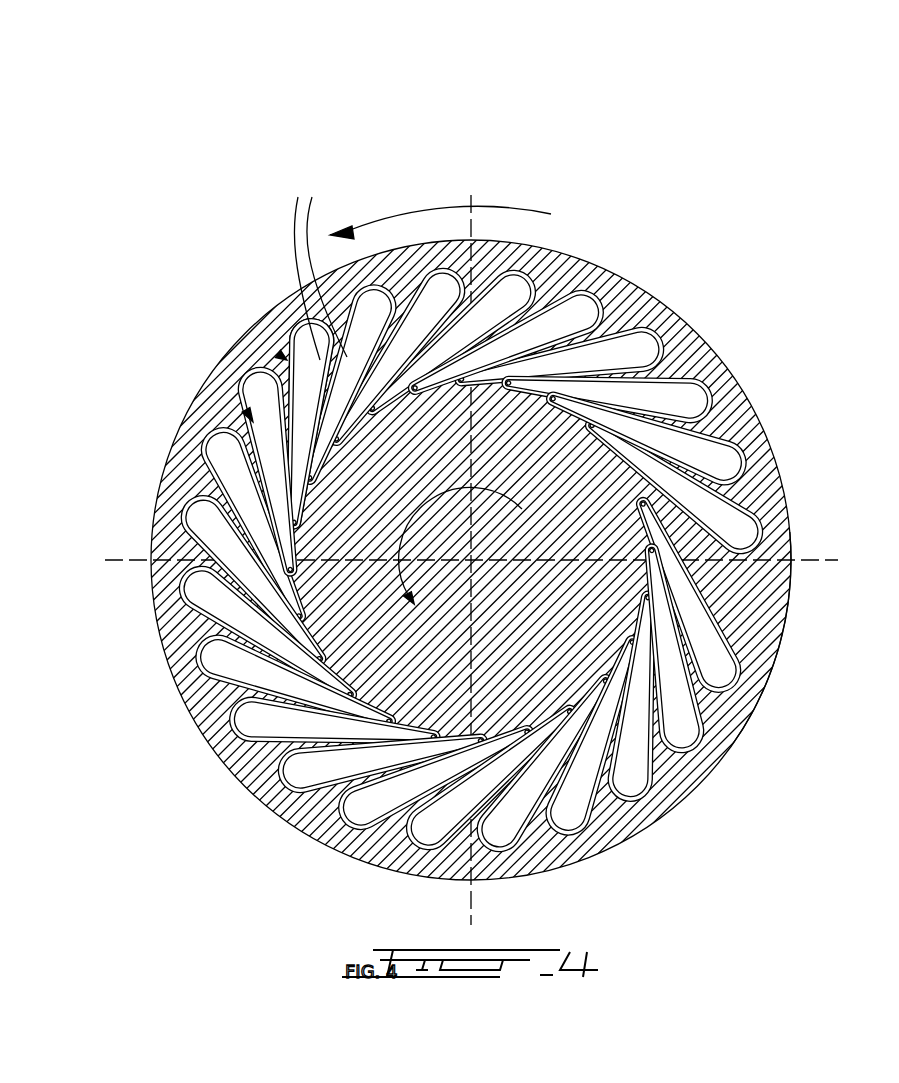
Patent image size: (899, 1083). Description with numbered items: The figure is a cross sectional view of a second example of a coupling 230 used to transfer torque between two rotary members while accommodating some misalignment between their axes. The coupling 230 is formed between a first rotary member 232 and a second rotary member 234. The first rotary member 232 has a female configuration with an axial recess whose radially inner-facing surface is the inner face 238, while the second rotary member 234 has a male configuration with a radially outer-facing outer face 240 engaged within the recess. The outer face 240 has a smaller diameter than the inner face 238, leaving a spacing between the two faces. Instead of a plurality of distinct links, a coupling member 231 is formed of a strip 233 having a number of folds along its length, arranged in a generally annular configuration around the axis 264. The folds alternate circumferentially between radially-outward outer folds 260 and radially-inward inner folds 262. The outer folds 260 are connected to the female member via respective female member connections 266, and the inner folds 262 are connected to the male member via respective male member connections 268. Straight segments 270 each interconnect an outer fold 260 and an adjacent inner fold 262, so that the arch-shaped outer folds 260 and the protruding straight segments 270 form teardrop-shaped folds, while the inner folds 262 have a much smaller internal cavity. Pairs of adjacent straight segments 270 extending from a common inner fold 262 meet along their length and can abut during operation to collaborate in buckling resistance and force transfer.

The coupling 230 is at (232, 202).
The coupling member 231 is at (245, 407).
The first rotary member 232 is at (563, 277).
The strip 233 is at (272, 350).
The second rotary member 234 is at (652, 503).
The inner face 238 is at (543, 313).
The outer face 240 is at (652, 532).
The outer folds 260 is at (737, 457).
The inner folds 262 is at (293, 525).
The axis 264 is at (475, 563).
The female member connections 266 is at (767, 672).
The male member connections 268 is at (290, 570).
The straight segments 270 is at (319, 265).